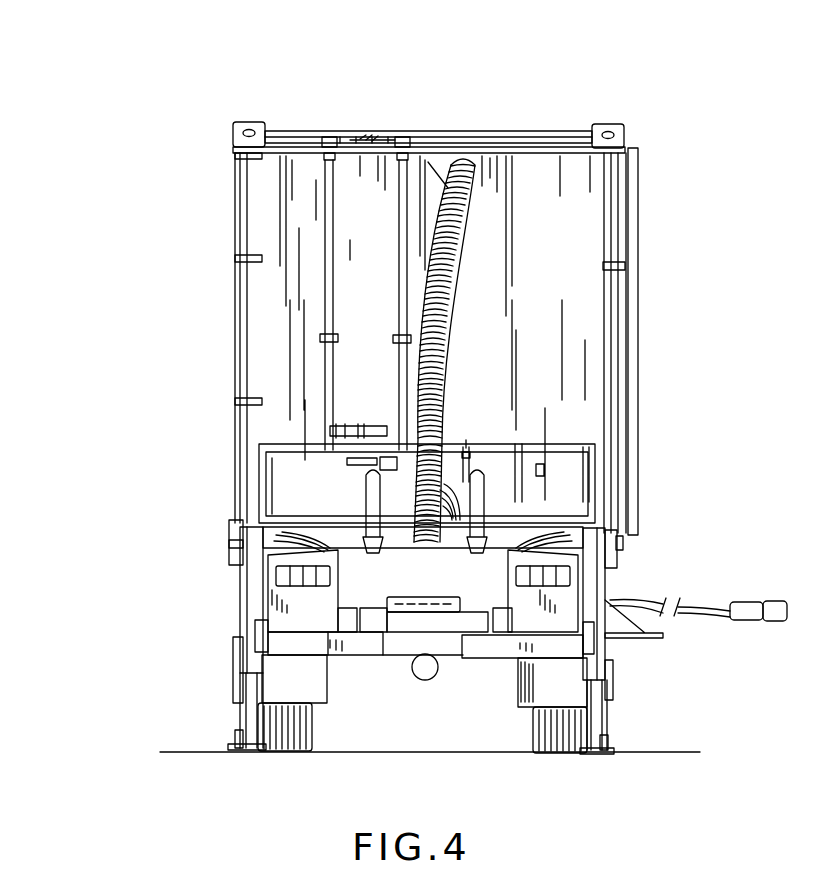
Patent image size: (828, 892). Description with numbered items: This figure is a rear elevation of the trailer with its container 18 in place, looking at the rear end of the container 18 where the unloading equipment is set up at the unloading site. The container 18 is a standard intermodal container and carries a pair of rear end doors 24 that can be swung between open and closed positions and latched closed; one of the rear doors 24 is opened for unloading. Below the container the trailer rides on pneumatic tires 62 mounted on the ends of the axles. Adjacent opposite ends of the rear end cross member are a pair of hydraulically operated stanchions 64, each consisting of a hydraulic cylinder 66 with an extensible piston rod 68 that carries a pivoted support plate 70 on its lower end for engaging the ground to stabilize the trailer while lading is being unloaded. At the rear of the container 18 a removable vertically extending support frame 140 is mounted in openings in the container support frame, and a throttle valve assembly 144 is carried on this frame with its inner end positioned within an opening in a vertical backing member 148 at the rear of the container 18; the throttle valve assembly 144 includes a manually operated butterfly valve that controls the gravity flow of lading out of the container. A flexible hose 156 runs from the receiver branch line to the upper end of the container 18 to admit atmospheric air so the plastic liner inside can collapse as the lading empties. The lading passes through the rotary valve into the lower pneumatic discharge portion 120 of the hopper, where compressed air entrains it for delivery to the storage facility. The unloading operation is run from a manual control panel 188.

The container 18 is at (232, 149).
The rear end doors 24 is at (263, 236).
The pneumatic tires 62 is at (285, 751).
The stanchions 64 is at (240, 575).
The hydraulic cylinder 66 is at (248, 602).
The extensible piston rod 68 is at (248, 692).
The pivoted support plate 70 is at (233, 748).
The lower pneumatic discharge portion 120 is at (409, 680).
The removable vertically extending support frame 140 is at (557, 450).
The throttle valve assembly 144 is at (465, 457).
The vertical backing member 148 is at (565, 286).
The flexible hose 156 is at (452, 190).
The manual control panel 188 is at (763, 602).